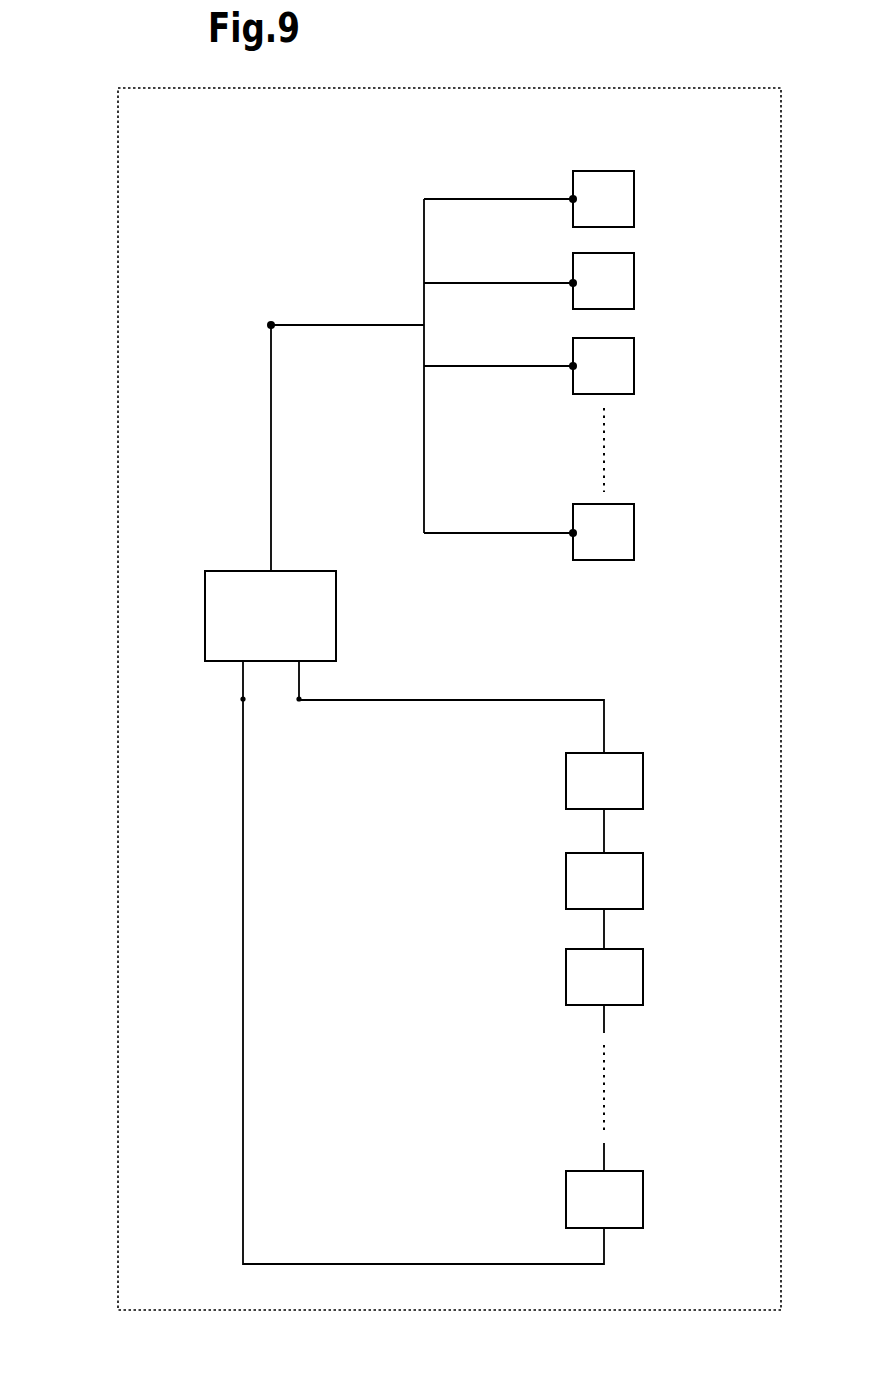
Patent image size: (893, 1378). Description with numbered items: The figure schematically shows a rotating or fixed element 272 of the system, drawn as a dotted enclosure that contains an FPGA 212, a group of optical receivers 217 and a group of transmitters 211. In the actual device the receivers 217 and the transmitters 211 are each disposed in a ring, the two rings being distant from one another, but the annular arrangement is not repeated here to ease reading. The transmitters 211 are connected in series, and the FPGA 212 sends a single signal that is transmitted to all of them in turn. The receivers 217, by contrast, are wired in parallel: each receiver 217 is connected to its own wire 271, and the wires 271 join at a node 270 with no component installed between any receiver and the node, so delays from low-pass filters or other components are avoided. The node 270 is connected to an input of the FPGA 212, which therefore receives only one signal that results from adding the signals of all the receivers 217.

The rotating or fixed element 272 is at (118, 163).
The FPGA 212 is at (222, 570).
The node 270 is at (423, 322).
The wire 271 is at (499, 197).
The optical receiver 217 is at (634, 215).
The transmitter 211 is at (643, 768).